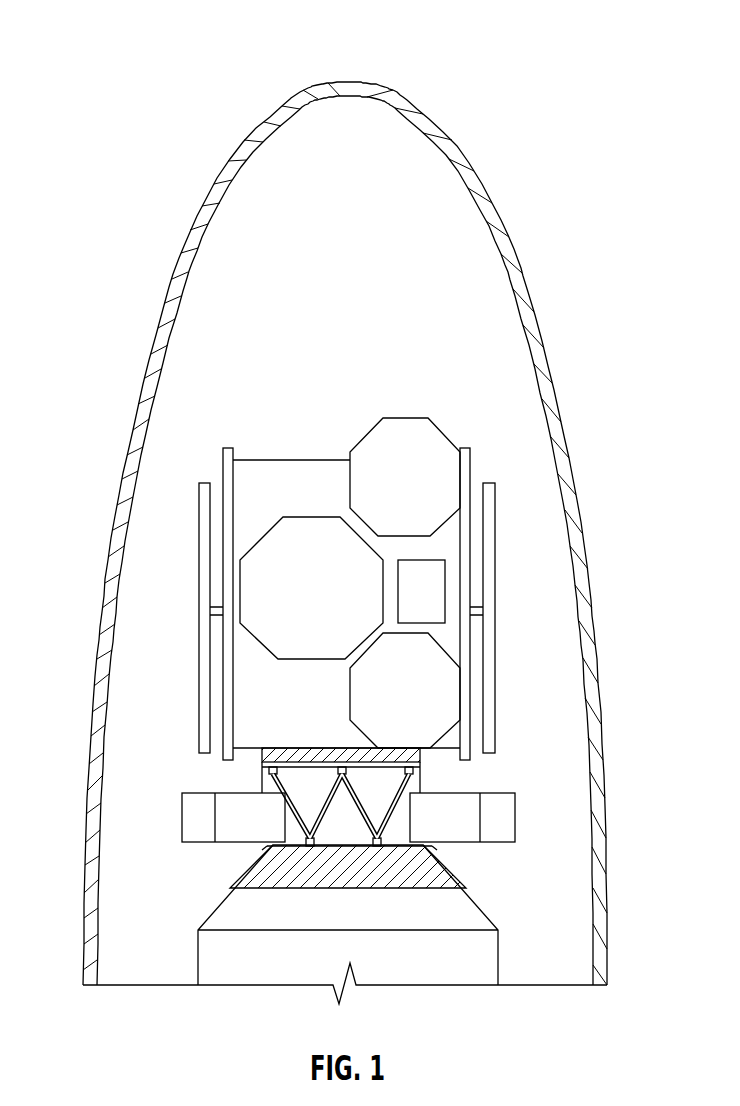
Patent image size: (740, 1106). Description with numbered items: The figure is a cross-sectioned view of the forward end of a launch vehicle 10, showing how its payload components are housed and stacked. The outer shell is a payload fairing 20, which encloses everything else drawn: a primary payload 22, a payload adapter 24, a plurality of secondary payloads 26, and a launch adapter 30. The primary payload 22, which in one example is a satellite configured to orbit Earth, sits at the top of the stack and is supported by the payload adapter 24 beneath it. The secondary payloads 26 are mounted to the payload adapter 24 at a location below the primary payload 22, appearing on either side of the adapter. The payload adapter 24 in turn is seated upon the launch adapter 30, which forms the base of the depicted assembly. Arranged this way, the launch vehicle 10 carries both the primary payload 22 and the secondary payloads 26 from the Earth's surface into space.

The launch vehicle 10 is at (590, 53).
The payload fairing 20 is at (487, 182).
The primary payload 22 is at (480, 440).
The payload adapter 24 is at (432, 764).
The secondary payloads 26 is at (233, 818).
The launch adapter 30 is at (548, 892).